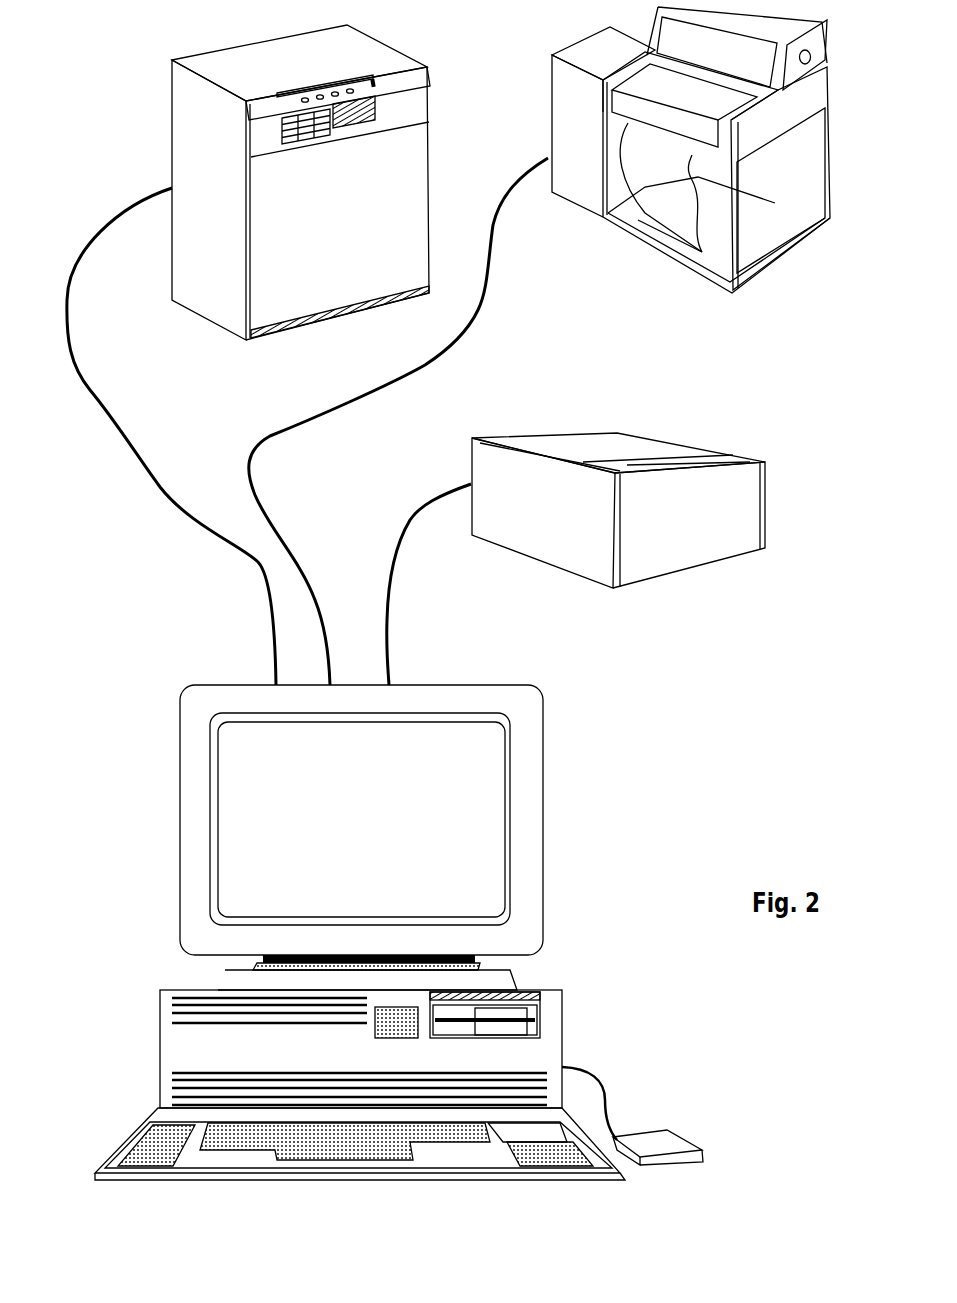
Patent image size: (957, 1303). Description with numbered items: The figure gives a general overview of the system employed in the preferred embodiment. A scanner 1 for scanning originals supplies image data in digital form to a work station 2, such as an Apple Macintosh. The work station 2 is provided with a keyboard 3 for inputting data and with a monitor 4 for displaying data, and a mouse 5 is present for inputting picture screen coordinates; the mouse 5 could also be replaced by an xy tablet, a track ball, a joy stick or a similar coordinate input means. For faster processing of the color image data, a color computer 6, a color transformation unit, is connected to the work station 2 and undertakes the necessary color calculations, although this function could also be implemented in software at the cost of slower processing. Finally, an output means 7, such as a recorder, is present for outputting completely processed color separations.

The scanner 1 is at (170, 120).
The work station 2 is at (135, 975).
The keyboard 3 is at (143, 1127).
The monitor 4 is at (503, 803).
The mouse 5 is at (667, 1140).
The color computer 6 is at (737, 557).
The output means 7 is at (800, 245).